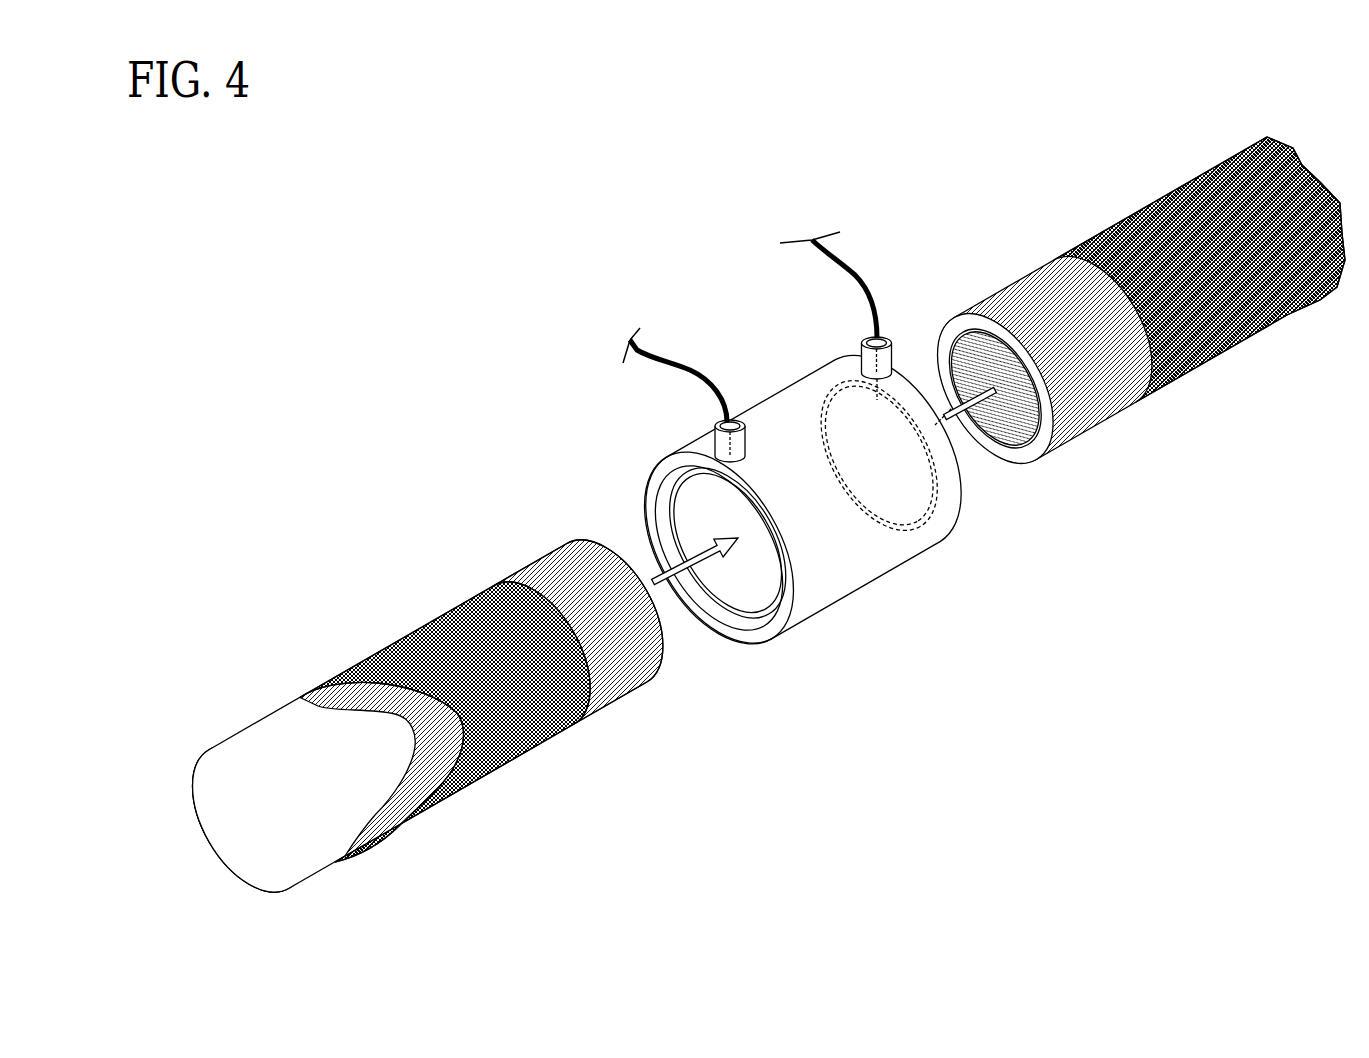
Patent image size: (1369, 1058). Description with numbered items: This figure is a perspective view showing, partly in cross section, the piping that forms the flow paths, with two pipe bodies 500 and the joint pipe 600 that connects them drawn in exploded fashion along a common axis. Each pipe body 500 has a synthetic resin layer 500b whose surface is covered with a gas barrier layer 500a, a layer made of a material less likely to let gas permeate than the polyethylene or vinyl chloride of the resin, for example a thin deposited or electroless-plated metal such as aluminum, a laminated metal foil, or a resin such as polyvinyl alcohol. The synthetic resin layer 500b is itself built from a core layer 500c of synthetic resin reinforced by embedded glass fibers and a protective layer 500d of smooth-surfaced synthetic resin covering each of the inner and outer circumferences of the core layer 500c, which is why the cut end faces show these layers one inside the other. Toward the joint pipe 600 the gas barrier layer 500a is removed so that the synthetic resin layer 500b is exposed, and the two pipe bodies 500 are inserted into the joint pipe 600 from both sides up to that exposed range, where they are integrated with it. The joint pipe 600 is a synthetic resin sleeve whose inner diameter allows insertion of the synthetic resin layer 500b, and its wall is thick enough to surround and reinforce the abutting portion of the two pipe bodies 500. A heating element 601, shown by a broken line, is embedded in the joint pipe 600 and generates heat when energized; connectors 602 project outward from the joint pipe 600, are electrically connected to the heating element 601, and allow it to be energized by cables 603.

The pipe body 500 is at (734, 481).
The gas barrier layer 500a is at (422, 626).
The synthetic resin layer 500b is at (734, 521).
The core layer 500c is at (323, 608).
The protective layer 500d is at (193, 767).
The joint pipe 600 is at (831, 416).
The heating element 601 is at (797, 563).
The connector 602 is at (713, 449).
The cable 603 is at (667, 354).